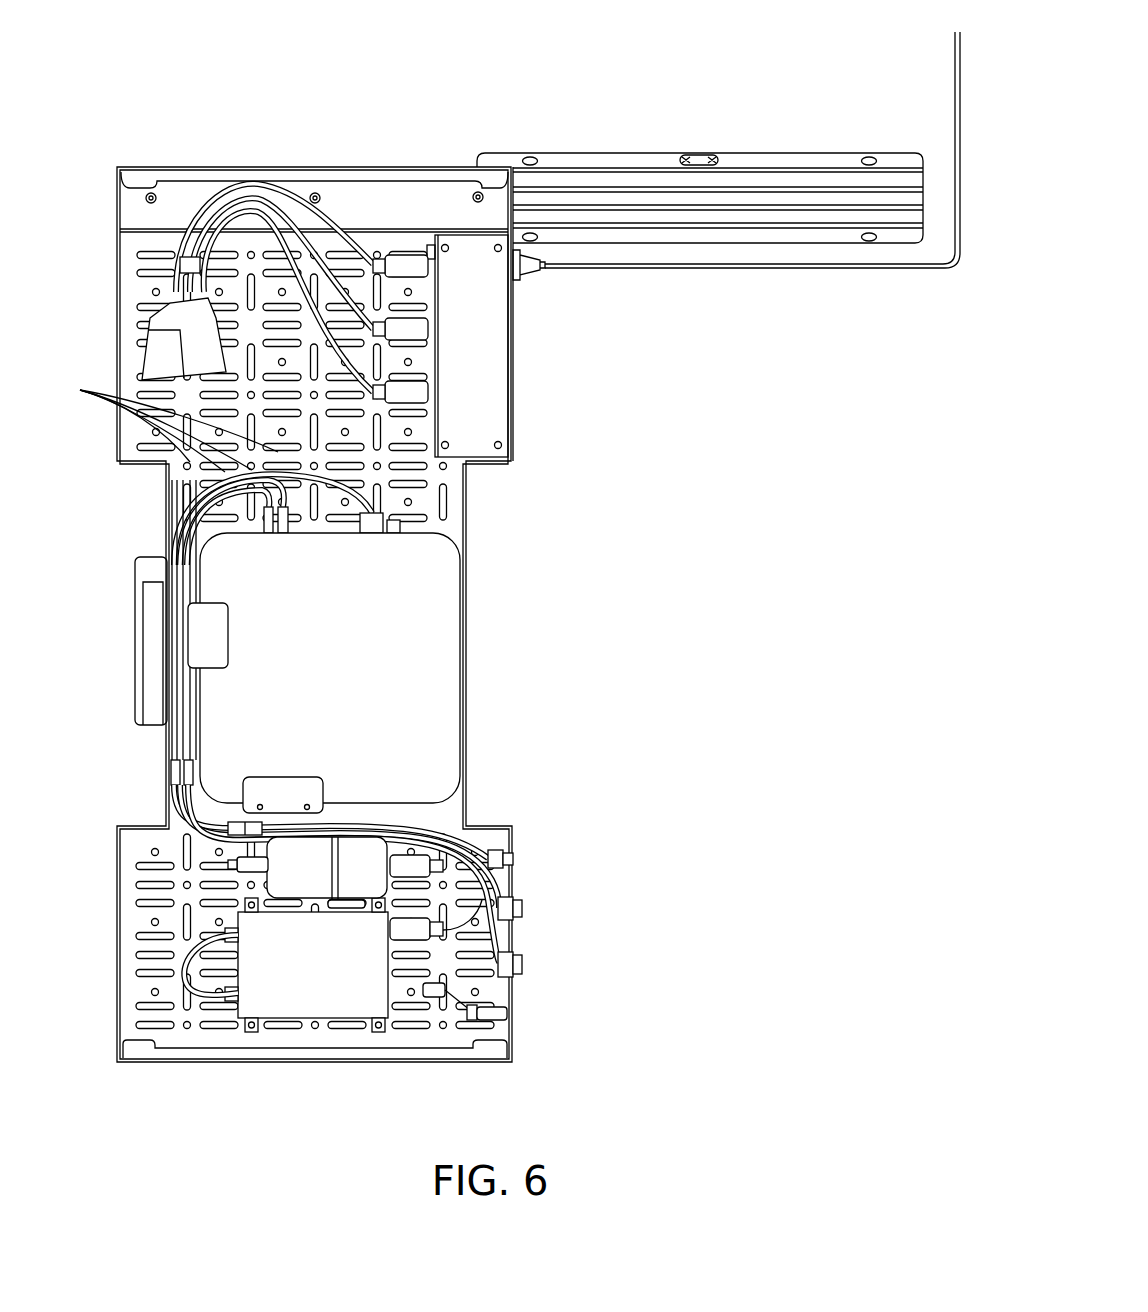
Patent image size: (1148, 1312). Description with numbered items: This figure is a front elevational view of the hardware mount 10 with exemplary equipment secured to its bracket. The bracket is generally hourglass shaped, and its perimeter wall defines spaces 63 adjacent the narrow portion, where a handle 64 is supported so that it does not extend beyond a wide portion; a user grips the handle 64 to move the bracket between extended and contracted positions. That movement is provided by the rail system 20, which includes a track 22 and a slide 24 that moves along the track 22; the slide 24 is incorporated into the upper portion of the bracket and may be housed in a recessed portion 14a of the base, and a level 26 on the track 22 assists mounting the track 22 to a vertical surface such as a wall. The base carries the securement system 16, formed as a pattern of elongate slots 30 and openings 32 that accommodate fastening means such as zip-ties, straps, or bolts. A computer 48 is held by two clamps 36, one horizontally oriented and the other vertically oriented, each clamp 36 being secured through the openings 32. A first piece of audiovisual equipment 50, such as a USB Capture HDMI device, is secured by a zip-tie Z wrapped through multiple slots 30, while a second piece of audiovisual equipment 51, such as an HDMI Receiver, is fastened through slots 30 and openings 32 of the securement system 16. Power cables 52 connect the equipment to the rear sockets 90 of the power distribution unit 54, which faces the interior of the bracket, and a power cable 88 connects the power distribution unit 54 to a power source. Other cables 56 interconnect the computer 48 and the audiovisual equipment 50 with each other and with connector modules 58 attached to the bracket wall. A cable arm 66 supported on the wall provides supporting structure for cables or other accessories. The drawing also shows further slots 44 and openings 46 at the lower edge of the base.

The hardware mount 10 is at (652, 780).
The recessed portion 14a is at (357, 197).
The securement system 16 is at (422, 430).
The rail system 20 is at (700, 259).
The track 22 is at (805, 153).
The slide 24 is at (540, 193).
The level 26 is at (700, 153).
The slots 30 is at (446, 492).
The openings 32 is at (447, 468).
The clamp 36 is at (228, 640).
The bottom slots 44 is at (148, 1036).
The bottom holes 46 is at (315, 1032).
The computer 48 is at (430, 587).
The first piece of audiovisual equipment 50 is at (358, 880).
The second piece of audiovisual equipment 51 is at (287, 1003).
The power cables 52 is at (275, 183).
The power distribution unit 54 is at (473, 248).
The cables 56 is at (278, 609).
The connector modules 58 is at (550, 945).
The spaces 63 is at (530, 658).
The handle 64 is at (150, 560).
The cable arm 66 is at (135, 168).
The power cable 88 is at (955, 60).
The rear sockets 90 is at (427, 250).
The zip-tie Z is at (338, 838).